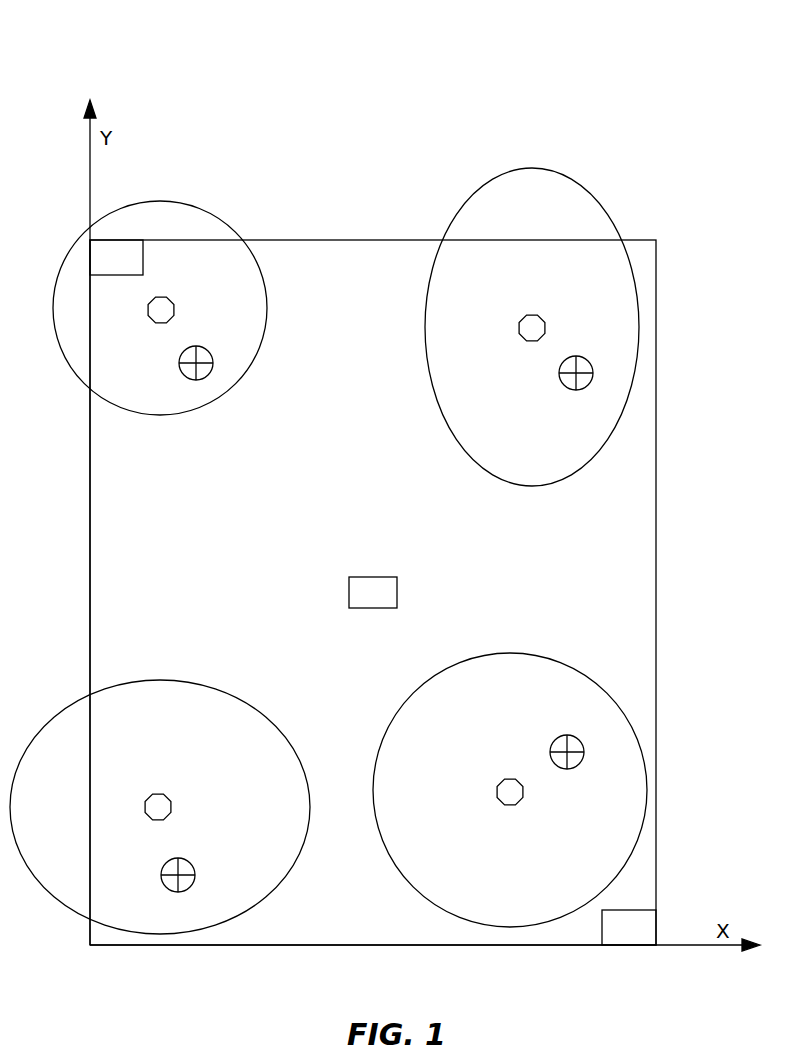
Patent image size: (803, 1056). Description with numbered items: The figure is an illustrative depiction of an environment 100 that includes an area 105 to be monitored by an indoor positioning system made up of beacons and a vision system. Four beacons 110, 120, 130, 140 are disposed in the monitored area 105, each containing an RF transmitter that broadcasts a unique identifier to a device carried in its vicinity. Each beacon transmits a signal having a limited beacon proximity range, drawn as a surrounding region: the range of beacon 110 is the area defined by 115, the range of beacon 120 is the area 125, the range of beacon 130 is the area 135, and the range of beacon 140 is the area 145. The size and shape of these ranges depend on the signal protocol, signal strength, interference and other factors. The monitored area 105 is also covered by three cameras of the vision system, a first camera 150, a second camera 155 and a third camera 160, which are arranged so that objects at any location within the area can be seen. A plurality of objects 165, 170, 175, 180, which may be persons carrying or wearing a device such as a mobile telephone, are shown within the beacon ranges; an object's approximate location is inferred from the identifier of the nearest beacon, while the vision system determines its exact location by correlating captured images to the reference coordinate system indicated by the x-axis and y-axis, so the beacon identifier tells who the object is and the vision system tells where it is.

The environment 100 is at (75, 46).
The area 105 is at (656, 510).
The beacon 110 is at (171, 300).
The beacon proximity range area 115 is at (201, 212).
The beacon 120 is at (525, 316).
The beacon proximity range area 125 is at (593, 198).
The beacon 130 is at (165, 795).
The beacon proximity range area 135 is at (230, 695).
The beacon 140 is at (503, 780).
The beacon proximity range area 145 is at (565, 664).
The camera C1 150 is at (632, 910).
The camera C2 155 is at (112, 275).
The camera C3 160 is at (349, 596).
The object 165 is at (187, 380).
The object 170 is at (570, 391).
The object 175 is at (188, 858).
The object 180 is at (556, 737).